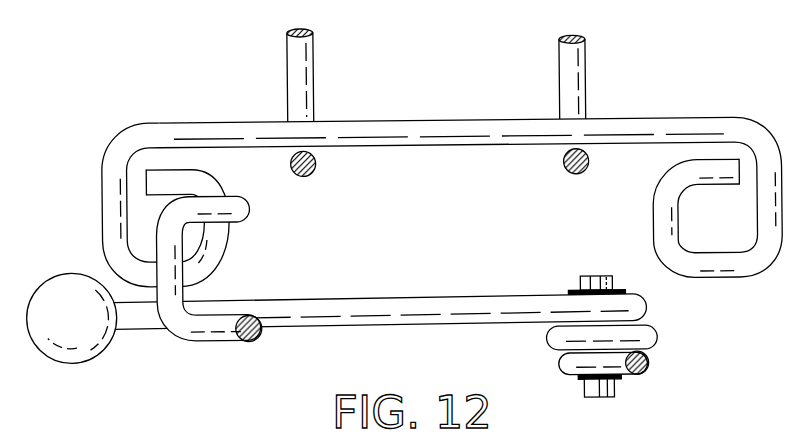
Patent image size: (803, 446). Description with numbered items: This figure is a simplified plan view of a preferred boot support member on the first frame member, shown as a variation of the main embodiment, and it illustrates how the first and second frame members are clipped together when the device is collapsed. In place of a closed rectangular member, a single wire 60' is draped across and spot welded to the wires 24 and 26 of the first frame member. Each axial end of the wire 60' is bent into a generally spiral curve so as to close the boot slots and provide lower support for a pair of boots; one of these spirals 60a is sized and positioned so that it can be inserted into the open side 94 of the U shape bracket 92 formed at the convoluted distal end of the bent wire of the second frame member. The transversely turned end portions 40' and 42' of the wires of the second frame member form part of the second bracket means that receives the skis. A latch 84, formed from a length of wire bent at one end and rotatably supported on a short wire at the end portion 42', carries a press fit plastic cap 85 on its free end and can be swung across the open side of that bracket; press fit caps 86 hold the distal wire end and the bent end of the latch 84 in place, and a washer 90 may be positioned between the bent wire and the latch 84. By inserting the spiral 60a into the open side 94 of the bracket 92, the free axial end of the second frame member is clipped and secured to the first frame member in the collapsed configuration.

The wire 24 is at (296, 91).
The wire 26 is at (570, 93).
The single wire 60' is at (467, 172).
The spiral 60a is at (111, 210).
The U shape bracket 92 is at (263, 213).
The open side 94 is at (218, 287).
The press fit plastic cap 85 is at (76, 283).
The latch 84 is at (457, 300).
The transversely turned end portion 40' is at (275, 338).
The press fit cap 86 is at (590, 282).
The washer 90 is at (650, 331).
The transversely turned end portion 42' is at (661, 365).